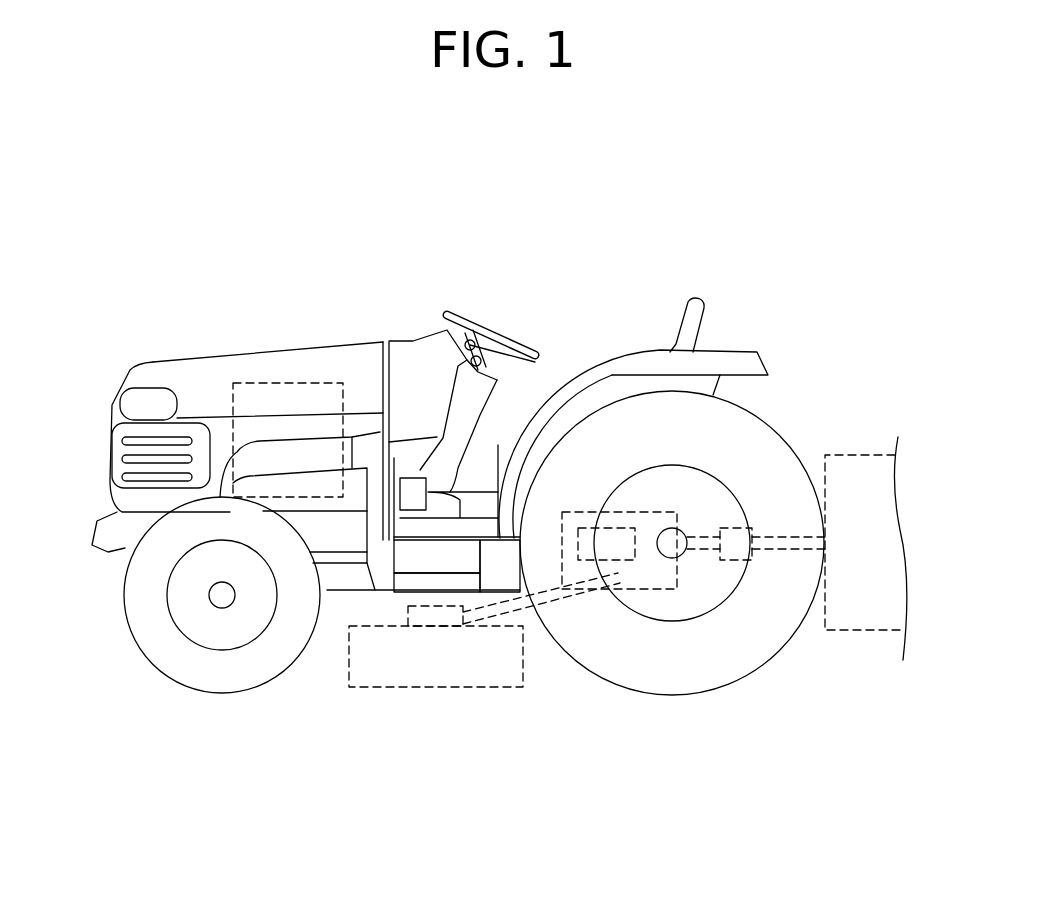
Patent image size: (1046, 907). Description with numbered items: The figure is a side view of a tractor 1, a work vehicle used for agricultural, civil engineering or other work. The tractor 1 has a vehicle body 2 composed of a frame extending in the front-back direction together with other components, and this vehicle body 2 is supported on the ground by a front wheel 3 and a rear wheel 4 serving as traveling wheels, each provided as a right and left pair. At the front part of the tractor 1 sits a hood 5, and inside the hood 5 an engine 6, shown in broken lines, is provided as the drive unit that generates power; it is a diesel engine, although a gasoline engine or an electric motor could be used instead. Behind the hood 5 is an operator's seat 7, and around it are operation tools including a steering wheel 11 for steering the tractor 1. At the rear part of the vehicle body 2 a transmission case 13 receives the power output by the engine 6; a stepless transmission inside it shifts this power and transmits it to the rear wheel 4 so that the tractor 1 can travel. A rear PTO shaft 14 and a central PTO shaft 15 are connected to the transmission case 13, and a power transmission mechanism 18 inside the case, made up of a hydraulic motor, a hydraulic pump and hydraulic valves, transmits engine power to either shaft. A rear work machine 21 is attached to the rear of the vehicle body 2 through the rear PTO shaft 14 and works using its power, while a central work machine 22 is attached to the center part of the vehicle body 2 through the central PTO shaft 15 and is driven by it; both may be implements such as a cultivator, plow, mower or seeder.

The tractor 1 is at (122, 233).
The vehicle body 2 is at (333, 628).
The front wheel 3 is at (215, 688).
The rear wheel 4 is at (767, 647).
The hood 5 is at (211, 350).
The engine 6 is at (300, 383).
The operator's seat 7 is at (690, 318).
The steering wheel 11 is at (463, 318).
The transmission case 13 is at (650, 600).
The rear PTO shaft 14 is at (703, 560).
The central PTO shaft 15 is at (615, 573).
The power transmission mechanism 18 is at (625, 575).
The rear work machine 21 is at (847, 633).
The central work machine 22 is at (413, 690).